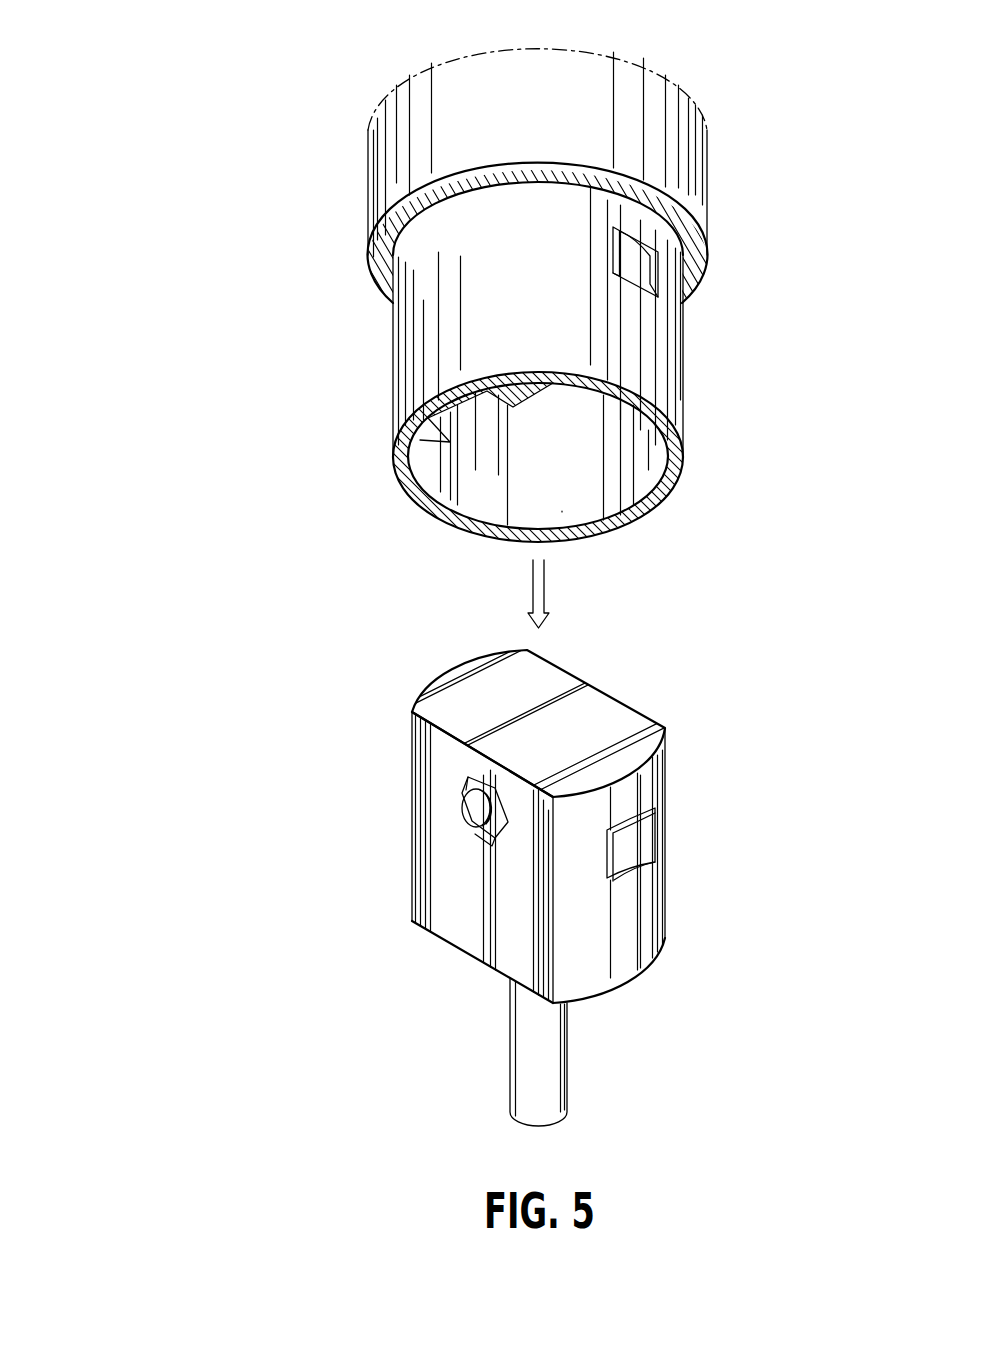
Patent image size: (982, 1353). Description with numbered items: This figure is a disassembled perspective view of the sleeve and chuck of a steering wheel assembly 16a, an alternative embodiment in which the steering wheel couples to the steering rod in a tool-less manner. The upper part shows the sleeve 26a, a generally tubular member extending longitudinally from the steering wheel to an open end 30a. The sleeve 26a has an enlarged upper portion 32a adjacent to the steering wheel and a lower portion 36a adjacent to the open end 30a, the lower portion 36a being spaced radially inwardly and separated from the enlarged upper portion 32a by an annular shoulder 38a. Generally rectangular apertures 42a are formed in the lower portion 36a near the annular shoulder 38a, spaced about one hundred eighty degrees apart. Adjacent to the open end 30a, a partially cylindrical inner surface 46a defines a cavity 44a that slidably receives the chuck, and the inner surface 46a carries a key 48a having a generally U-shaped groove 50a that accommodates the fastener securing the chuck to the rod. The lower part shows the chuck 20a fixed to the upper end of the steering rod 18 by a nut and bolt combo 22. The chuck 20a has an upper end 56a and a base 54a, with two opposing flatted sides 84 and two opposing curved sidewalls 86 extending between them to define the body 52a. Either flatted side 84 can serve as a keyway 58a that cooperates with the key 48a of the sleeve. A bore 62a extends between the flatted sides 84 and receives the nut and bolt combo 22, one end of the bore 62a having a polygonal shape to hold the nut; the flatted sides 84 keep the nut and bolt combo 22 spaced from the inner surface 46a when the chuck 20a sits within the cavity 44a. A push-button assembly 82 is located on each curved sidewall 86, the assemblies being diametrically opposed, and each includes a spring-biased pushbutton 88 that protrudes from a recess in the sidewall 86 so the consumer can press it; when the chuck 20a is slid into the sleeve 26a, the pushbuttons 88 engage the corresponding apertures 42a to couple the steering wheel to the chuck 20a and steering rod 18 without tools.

The steering wheel assembly 16a is at (162, 153).
The sleeve 26a is at (306, 346).
The enlarged upper portion 32a is at (708, 188).
The annular shoulder 38a is at (372, 258).
The lower portion 36a is at (683, 352).
The aperture 42a is at (656, 285).
The open end 30a is at (634, 513).
The inner surface 46a is at (568, 474).
The key 48a is at (418, 447).
The groove 50a is at (446, 421).
The cavity 44a is at (562, 511).
The chuck 20a is at (391, 668).
The body 52a is at (411, 904).
The upper end 56a is at (553, 680).
The flatted side 84 is at (620, 708).
The curved sidewall 86 is at (447, 673).
The keyway 58a is at (418, 880).
The base 54a is at (440, 935).
The push-button assembly 82 is at (653, 826).
The pushbutton 88 is at (640, 850).
The bore 62a is at (467, 789).
The nut and bolt combo 22 is at (478, 812).
The steering rod 18 is at (510, 1043).